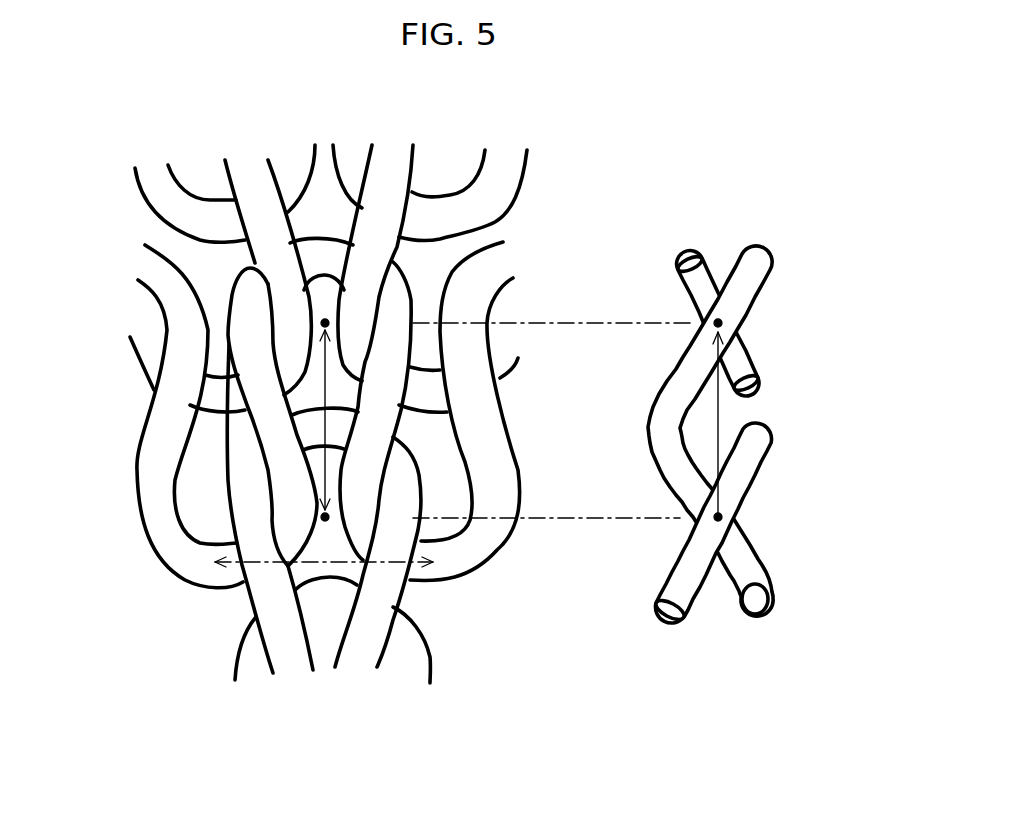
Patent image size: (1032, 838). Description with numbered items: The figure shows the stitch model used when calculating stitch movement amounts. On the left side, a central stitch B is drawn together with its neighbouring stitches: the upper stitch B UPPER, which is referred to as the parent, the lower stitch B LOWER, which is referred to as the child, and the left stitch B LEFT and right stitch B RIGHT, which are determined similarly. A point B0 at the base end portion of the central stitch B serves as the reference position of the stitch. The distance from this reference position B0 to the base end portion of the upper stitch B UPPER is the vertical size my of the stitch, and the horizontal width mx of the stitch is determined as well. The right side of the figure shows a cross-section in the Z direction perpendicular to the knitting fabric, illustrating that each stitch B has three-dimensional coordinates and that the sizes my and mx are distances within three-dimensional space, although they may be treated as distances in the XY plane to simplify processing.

The central stitch B is at (363, 462).
The upper stitch B UPPER is at (398, 248).
The lower stitch B LOWER is at (367, 620).
The left stitch B LEFT is at (155, 468).
The right stitch B RIGHT is at (520, 443).
The reference position B0 is at (787, 521).
The horizontal size of the stitch mx is at (324, 550).
The vertical size of the stitch my is at (535, 423).